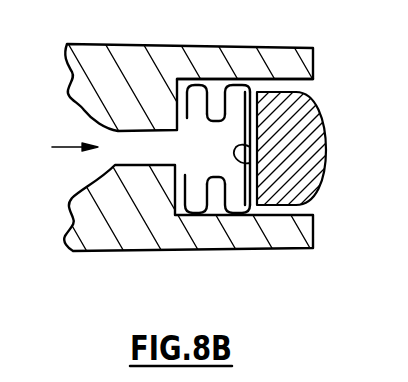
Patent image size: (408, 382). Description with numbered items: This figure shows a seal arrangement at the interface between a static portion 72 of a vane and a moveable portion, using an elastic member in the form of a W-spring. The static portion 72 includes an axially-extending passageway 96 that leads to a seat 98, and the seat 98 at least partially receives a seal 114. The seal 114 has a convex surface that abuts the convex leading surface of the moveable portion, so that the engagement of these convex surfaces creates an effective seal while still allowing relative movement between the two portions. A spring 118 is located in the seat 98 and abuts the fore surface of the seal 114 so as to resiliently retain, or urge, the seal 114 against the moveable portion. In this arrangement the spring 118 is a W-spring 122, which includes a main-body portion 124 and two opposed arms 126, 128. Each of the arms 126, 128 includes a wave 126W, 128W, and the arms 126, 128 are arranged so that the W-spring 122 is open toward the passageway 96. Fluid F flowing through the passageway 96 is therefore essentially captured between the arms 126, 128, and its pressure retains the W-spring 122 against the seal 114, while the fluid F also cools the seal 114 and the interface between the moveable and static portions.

The static portion 72 is at (107, 95).
The passageway 96 is at (132, 150).
The seat 98 is at (267, 78).
The seal 114 is at (303, 130).
The spring 118 is at (249, 178).
The W-spring 122 is at (228, 213).
The main-body portion 124 is at (252, 160).
The arm 126 is at (230, 100).
The wave 126W is at (210, 131).
The arm 128 is at (195, 213).
The wave 128W is at (212, 177).
The fluid F is at (66, 148).